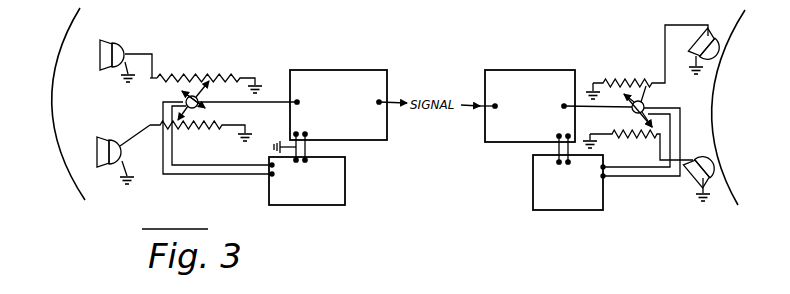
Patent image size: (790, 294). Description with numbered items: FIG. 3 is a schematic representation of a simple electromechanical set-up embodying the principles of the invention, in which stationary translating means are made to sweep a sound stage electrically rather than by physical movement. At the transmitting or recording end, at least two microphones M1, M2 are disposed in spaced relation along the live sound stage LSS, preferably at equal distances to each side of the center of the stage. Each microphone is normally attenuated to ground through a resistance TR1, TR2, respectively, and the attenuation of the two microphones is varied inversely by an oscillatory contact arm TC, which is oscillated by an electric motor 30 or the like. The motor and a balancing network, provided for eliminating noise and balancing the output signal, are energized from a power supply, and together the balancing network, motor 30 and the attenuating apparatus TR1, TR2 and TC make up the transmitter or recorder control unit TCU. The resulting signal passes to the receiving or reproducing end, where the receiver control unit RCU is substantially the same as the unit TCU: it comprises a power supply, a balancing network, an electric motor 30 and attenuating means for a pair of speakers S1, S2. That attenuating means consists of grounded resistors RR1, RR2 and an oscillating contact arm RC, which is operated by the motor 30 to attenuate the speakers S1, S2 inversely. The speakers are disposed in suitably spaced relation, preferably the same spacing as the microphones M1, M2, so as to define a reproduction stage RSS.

The live sound stage LSS is at (62, 40).
The microphone M1 is at (100, 60).
The microphone M2 is at (97, 143).
The resistance TR1 is at (196, 76).
The resistance TR2 is at (187, 130).
The oscillatory contact arm TC is at (203, 80).
The transmitter or recorder control unit TCU is at (234, 74).
The electric motor 30 is at (184, 100).
The receiver control unit RCU is at (590, 62).
The oscillating contact arm RC is at (630, 93).
The grounded resistor RR1 is at (638, 79).
The grounded resistor RR2 is at (622, 138).
The speaker S1 is at (726, 60).
The speaker S2 is at (718, 166).
The reproduction stage RSS is at (712, 116).